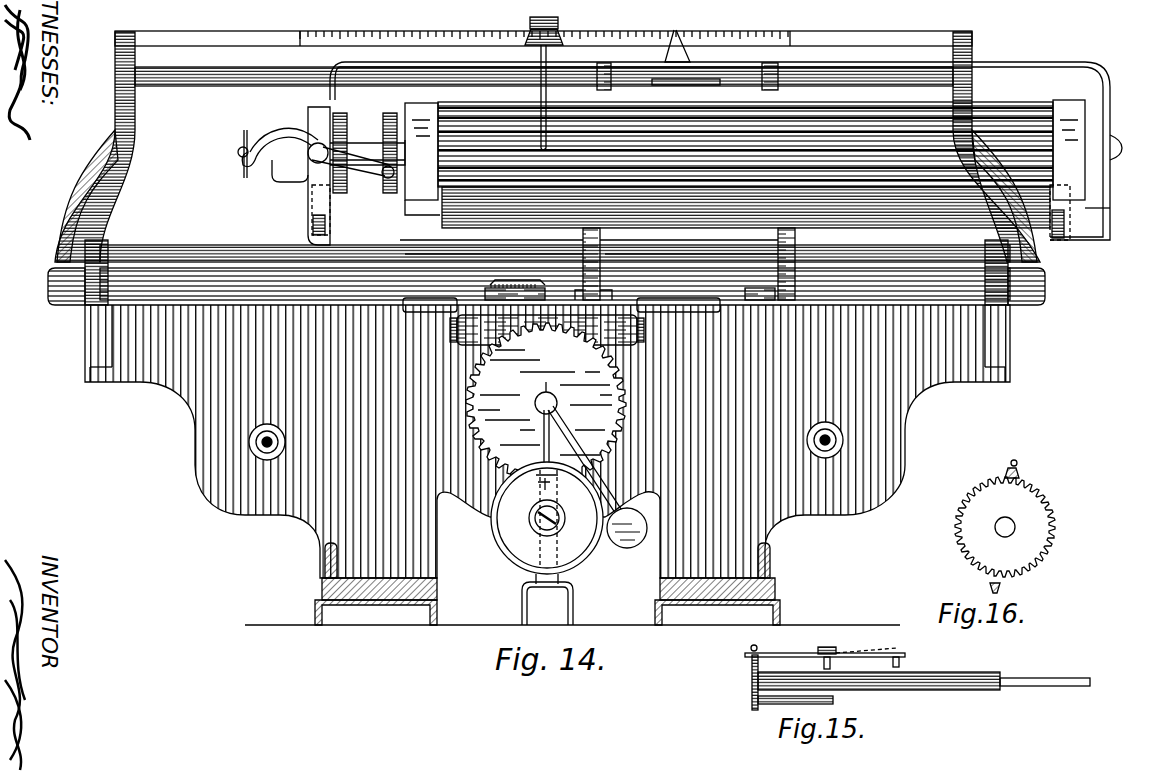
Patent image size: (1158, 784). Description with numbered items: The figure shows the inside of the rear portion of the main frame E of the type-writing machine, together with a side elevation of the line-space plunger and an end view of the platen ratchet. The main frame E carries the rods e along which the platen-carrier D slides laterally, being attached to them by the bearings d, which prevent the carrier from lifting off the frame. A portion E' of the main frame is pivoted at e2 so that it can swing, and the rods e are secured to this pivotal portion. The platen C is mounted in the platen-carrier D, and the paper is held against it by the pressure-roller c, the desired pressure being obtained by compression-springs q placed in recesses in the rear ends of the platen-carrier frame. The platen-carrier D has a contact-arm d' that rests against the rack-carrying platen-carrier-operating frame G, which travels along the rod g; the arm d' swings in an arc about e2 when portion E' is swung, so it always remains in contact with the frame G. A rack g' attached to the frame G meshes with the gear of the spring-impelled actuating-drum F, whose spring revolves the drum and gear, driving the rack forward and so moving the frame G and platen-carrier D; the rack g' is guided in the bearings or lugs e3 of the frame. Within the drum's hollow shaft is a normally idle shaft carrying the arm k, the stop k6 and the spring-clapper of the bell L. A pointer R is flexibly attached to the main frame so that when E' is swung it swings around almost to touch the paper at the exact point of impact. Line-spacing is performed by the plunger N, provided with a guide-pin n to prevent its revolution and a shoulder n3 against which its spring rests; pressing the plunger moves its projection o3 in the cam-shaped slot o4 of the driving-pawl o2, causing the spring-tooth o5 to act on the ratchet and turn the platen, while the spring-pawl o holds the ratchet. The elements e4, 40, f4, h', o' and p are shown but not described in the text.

In FIG. 14, the main frame E is at (547, 296).
In FIG. 14, the pivoted portion of main frame E' is at (556, 196).
In FIG. 14, the rods e is at (200, 78).
In FIG. 14, the pivot e2 is at (46, 288).
In FIG. 14, the bearings or lugs e3 is at (462, 346).
In FIG. 14, the screw e4 is at (268, 424).
In FIG. 14, the platen-carrier D is at (1108, 95).
In FIG. 14, the platen C is at (745, 144).
In FIG. 14, the pressure-roller c is at (746, 207).
In FIG. 14, the bearings d is at (661, 181).
In FIG. 14, the contact-arm d' is at (628, 264).
In FIG. 14, the platen-carrier-operating frame G is at (685, 289).
In FIG. 14, the pointer R is at (546, 95).
In FIG. 14, the spring-pawl o is at (385, 164).
In FIG. 16, the spring-pawl o is at (1014, 527).
In FIG. 14, the bearing bracket o' is at (334, 169).
In FIG. 14, the driving-pawl o2 is at (290, 136).
In FIG. 15, the driving-pawl o2 is at (788, 653).
In FIG. 14, the projection of the plunger o3 is at (241, 150).
In FIG. 15, the projection of the plunger o3 is at (755, 641).
In FIG. 16, the cam-shaped slot o4 is at (1014, 466).
In FIG. 16, the spring-tooth o5 is at (1001, 590).
In FIG. 15, the spring-tooth o5 is at (908, 641).
In FIG. 14, the plunger N is at (242, 172).
In FIG. 15, the plunger N is at (750, 686).
In FIG. 15, the guide-pin n is at (836, 700).
In FIG. 15, the shoulder n3 is at (1000, 676).
In FIG. 14, the spring p is at (290, 178).
In FIG. 14, the compression-springs q is at (312, 228).
In FIG. 14, the rod g is at (594, 239).
In FIG. 14, the rack g' is at (821, 305).
In FIG. 14, the slide block 40 is at (561, 318).
In FIG. 14, the arm f4 is at (648, 383).
In FIG. 14, the spring-impelled actuating-drum F is at (546, 403).
In FIG. 14, the stop k6 is at (544, 446).
In FIG. 14, the arm k is at (608, 500).
In FIG. 14, the bell L is at (547, 543).
In FIG. 14, the foot h' is at (547, 584).